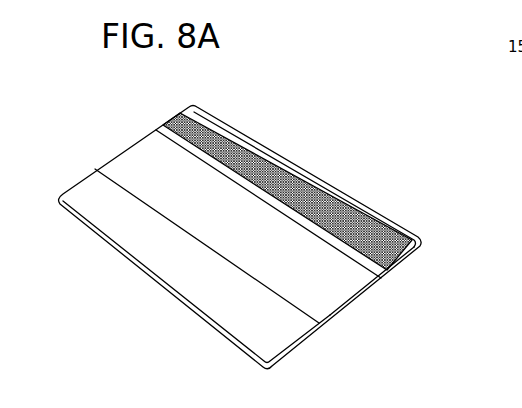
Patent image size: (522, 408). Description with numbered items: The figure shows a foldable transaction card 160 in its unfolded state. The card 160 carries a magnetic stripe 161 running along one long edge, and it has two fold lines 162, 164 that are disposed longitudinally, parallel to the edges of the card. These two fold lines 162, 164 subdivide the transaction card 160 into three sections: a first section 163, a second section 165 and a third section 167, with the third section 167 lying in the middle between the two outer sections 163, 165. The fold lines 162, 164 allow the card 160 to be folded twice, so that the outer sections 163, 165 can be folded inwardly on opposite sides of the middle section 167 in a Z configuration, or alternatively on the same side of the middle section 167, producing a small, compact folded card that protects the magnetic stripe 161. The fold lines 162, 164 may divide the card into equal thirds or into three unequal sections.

The foldable transaction card 160 is at (80, 195).
The magnetic stripe 161 is at (257, 153).
The fold line 162 is at (323, 329).
The first section 163 is at (175, 267).
The fold line 164 is at (383, 278).
The second section 165 is at (344, 198).
The third section 167 is at (322, 304).